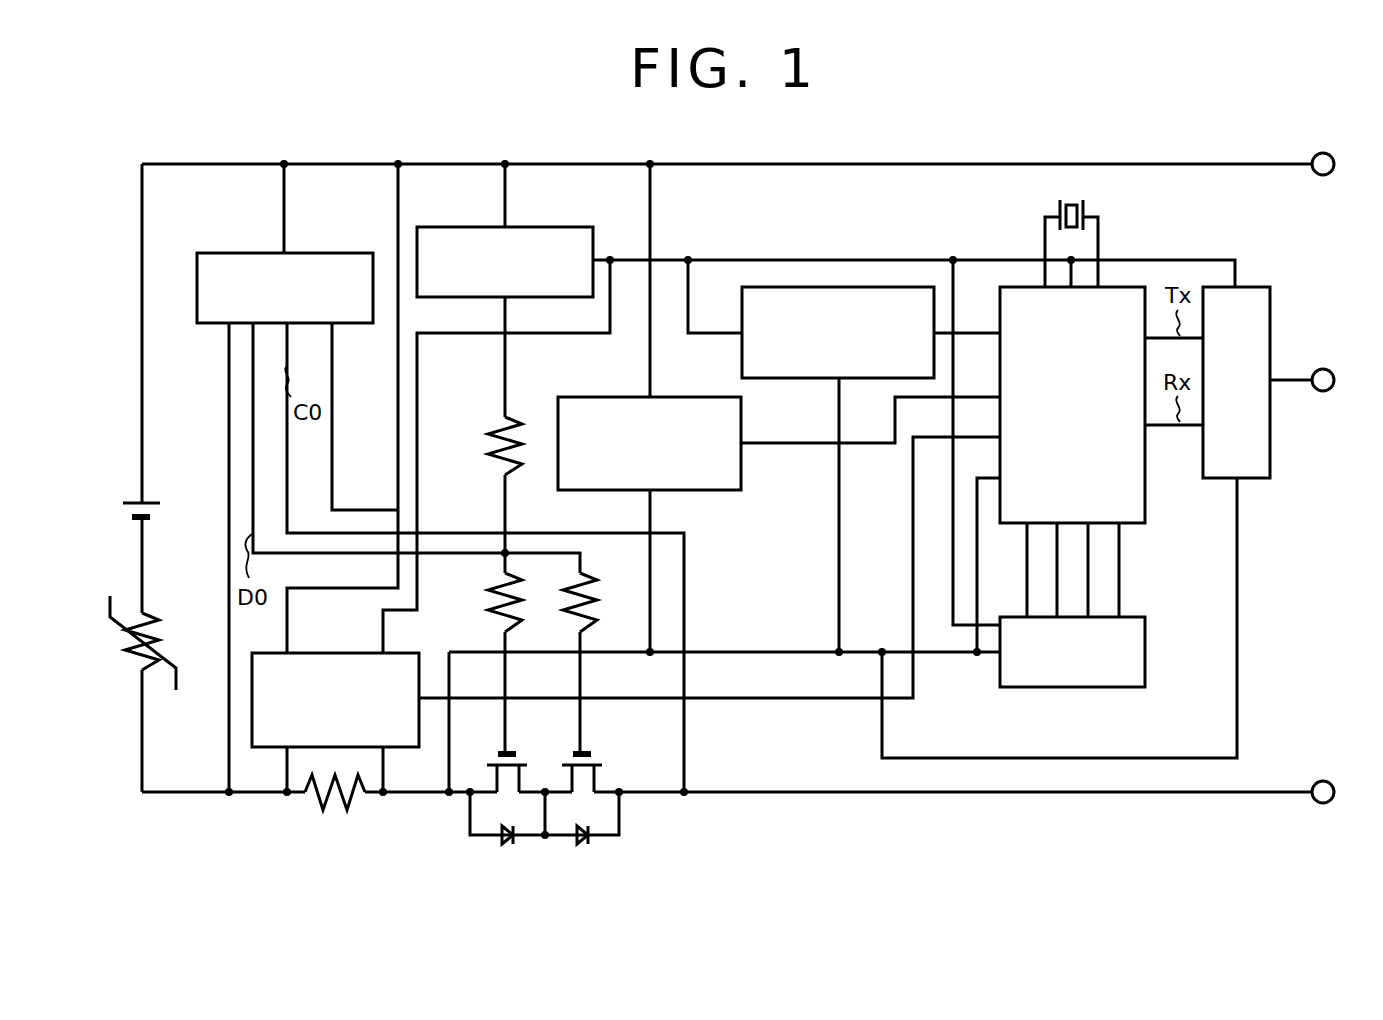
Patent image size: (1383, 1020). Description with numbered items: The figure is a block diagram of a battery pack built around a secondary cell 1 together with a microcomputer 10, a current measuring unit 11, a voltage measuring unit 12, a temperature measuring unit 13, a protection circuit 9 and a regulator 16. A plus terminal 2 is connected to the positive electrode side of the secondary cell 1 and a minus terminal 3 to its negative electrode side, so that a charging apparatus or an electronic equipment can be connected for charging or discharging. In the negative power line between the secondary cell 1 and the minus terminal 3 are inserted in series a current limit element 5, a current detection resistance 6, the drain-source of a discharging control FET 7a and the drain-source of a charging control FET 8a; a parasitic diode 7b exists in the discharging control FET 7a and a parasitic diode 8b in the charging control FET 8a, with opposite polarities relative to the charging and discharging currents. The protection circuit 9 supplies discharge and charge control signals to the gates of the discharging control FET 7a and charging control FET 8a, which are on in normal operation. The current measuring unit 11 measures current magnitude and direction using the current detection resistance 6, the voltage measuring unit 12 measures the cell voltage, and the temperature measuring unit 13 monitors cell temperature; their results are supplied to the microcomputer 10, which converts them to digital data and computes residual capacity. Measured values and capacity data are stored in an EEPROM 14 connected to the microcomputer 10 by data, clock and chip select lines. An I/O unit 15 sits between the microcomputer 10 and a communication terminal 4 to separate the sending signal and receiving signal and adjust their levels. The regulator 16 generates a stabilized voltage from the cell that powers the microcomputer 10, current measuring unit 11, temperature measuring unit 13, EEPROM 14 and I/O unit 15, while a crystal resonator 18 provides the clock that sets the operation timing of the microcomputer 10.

The secondary cell 1 is at (123, 513).
The plus terminal 2 is at (1335, 166).
The minus terminal 3 is at (1335, 794).
The communication terminal 4 is at (1335, 382).
The current limit element 5 is at (123, 659).
The current detection resistance 6 is at (330, 812).
The discharging control FET 7a is at (495, 759).
The parasitic diode 7b is at (508, 846).
The charging control FET 8a is at (570, 759).
The parasitic diode 8b is at (583, 846).
The protection circuit 9 is at (228, 252).
The microcomputer 10 is at (1147, 509).
The current measuring unit 11 is at (340, 652).
The voltage measuring unit 12 is at (691, 397).
The temperature measuring unit 13 is at (784, 380).
The EEPROM 14 is at (1147, 654).
The I/O unit 15 is at (1272, 456).
The regulator 16 is at (448, 227).
The crystal resonator 18 is at (1087, 204).